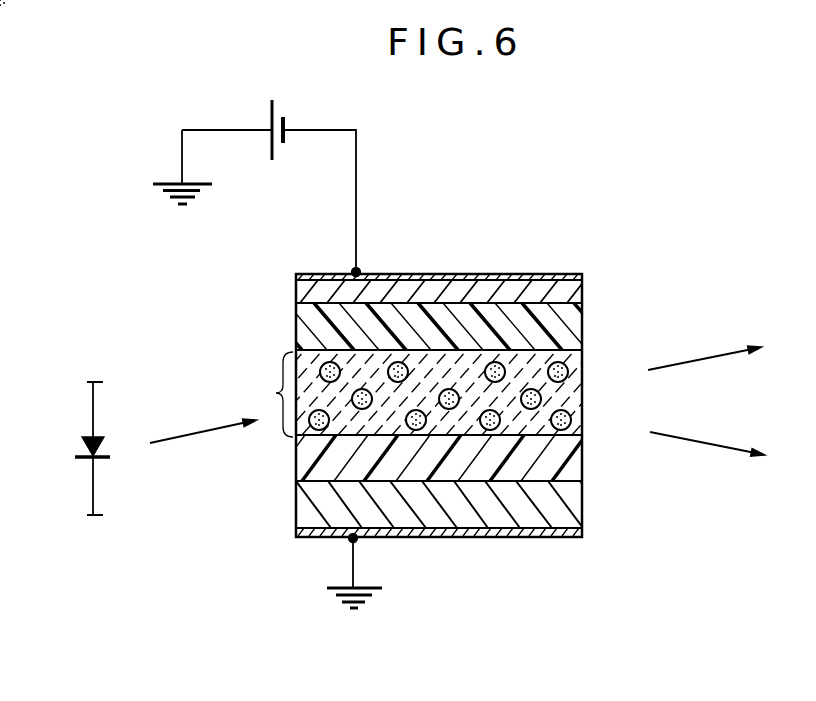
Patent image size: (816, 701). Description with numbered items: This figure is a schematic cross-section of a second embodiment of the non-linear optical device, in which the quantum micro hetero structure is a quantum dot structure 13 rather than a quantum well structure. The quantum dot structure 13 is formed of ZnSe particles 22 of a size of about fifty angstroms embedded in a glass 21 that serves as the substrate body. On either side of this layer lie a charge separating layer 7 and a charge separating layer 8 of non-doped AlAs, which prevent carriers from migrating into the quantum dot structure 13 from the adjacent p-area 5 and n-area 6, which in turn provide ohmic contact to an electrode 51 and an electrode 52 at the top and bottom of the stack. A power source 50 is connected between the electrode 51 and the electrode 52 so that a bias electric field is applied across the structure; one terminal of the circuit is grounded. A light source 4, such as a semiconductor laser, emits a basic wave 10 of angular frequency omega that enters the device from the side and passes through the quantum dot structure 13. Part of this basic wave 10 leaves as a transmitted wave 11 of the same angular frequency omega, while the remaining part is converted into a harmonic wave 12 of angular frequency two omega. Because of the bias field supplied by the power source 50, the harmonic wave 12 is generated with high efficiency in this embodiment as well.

The light source (laser diode) 4 is at (75, 453).
The p-area 5 is at (582, 290).
The n-area 6 is at (582, 510).
The charge separating layer 7 is at (582, 322).
The charge separating layer 8 is at (582, 460).
The basic wave 10 is at (203, 437).
The transmitted wave 11 is at (728, 357).
The harmonic wave 12 is at (732, 452).
The quantum dot structure 13 is at (277, 390).
The glass 21 is at (582, 400).
The nonlinear optical particles 22 is at (583, 368).
The power source 50 is at (280, 113).
The electrode 51 is at (541, 272).
The electrode 52 is at (550, 538).